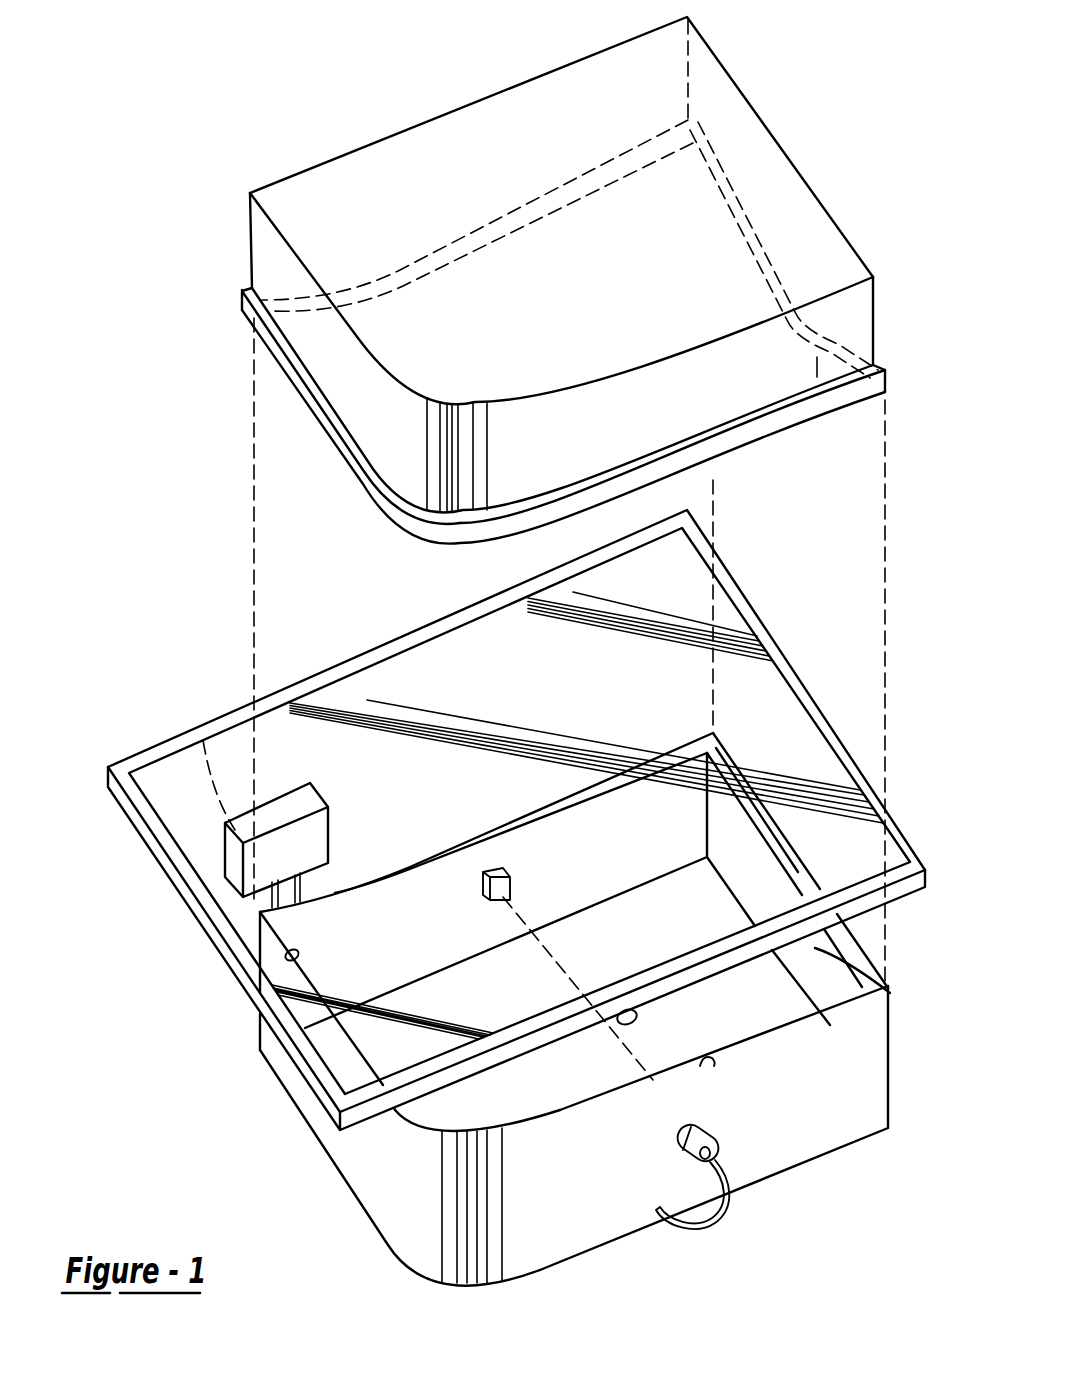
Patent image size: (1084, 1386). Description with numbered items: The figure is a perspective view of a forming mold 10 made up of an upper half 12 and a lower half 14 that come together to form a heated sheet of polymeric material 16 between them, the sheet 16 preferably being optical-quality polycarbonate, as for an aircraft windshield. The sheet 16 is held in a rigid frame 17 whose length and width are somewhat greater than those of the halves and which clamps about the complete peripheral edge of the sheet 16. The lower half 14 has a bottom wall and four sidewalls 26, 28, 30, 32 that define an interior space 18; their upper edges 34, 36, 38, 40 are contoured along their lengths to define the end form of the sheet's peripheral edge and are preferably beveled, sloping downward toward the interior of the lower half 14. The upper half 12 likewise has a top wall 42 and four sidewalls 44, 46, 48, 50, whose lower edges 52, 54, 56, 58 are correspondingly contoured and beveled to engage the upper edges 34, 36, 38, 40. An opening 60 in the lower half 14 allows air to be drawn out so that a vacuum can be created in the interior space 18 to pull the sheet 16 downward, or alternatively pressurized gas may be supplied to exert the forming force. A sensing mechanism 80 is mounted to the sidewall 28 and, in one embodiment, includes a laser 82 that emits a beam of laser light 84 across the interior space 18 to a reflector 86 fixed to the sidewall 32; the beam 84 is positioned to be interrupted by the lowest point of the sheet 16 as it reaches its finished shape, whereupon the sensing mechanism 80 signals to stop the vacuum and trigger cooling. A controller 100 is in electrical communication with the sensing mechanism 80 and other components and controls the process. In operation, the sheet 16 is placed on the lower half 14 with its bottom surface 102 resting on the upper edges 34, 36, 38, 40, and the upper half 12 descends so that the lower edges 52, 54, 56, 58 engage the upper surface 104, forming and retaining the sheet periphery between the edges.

The forming mold 10 is at (88, 163).
The upper half 12 is at (498, 87).
The lower half 14 is at (354, 1185).
The sheet of polymeric material 16 is at (345, 659).
The rigid frame 17 is at (432, 630).
The interior space 18 is at (575, 1077).
The sidewall 26 is at (292, 1073).
The sidewall 28 is at (613, 1225).
The sidewall 30 is at (823, 978).
The sidewall 32 is at (377, 927).
The upper edge 34 is at (278, 958).
The upper edge 36 is at (712, 1060).
The upper edge 38 is at (775, 870).
The upper edge 40 is at (442, 863).
The top wall 42 is at (363, 197).
The sidewall 44 is at (263, 257).
The sidewall 46 is at (752, 403).
The sidewall 48 is at (765, 173).
The sidewall 50 is at (307, 200).
The lower edge 52 is at (323, 437).
The lower edge 54 is at (727, 470).
The lower edge 56 is at (828, 402).
The lower edge 58 is at (613, 117).
The opening 60 is at (645, 1015).
The sensing mechanism 80 is at (716, 1137).
The laser 82 is at (687, 1142).
The beam of laser light 84 is at (567, 972).
The reflector 86 is at (503, 887).
The controller 100 is at (203, 720).
The bottom surface 102 is at (530, 653).
The upper surface 104 is at (765, 690).